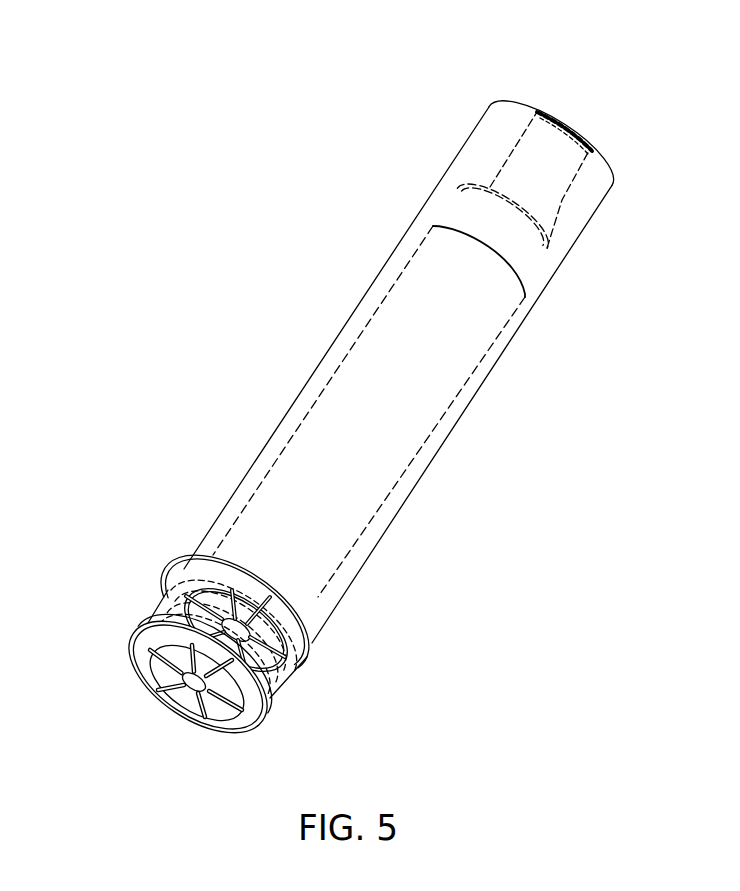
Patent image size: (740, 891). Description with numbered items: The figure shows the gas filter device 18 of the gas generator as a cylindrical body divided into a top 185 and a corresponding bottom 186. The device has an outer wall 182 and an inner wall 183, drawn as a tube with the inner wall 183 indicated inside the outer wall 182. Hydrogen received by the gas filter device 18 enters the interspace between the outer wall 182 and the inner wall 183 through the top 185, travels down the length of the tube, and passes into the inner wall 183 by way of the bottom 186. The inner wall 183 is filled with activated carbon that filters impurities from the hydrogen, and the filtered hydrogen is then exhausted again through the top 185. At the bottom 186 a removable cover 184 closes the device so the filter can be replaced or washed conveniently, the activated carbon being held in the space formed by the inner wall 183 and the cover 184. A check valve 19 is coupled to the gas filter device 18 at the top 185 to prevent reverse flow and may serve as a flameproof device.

The gas filter device 18 is at (303, 281).
The check valve 19 is at (566, 117).
The outer wall 182 is at (253, 464).
The inner wall 183 is at (455, 398).
The removable cover 184 is at (132, 657).
The top 185 is at (610, 190).
The bottom 186 is at (277, 687).